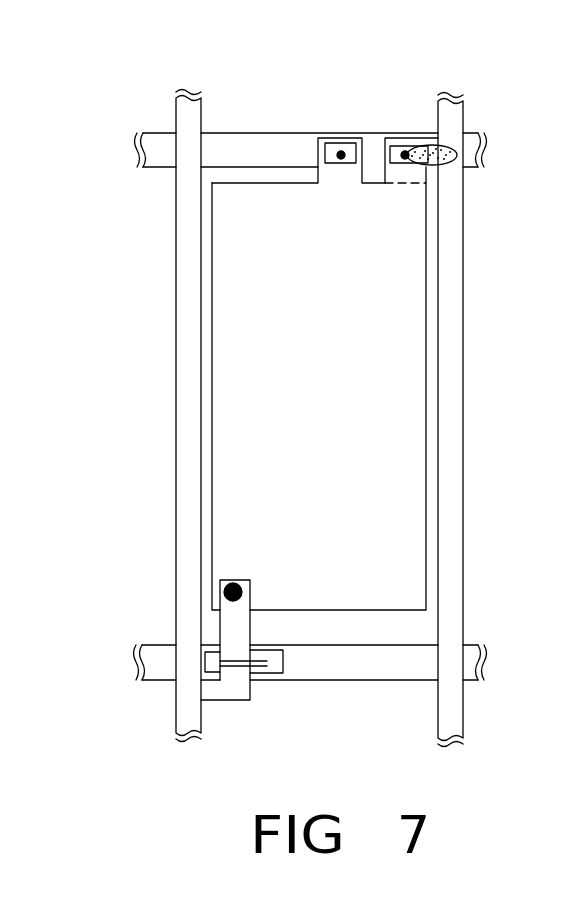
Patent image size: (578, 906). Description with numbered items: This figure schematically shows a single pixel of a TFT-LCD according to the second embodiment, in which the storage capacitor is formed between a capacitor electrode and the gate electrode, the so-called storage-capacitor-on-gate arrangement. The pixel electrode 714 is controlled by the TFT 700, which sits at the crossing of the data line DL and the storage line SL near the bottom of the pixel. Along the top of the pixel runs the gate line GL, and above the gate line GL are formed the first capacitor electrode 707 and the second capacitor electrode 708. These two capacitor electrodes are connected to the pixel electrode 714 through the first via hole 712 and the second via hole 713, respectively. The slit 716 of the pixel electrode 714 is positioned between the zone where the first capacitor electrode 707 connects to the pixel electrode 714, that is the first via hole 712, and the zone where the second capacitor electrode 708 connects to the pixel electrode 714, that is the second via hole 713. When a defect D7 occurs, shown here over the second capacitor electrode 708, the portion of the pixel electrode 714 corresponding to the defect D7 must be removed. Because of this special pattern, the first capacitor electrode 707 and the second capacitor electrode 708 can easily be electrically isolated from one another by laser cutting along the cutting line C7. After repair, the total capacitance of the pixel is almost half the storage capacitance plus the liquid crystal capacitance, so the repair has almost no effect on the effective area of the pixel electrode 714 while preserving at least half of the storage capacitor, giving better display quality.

The TFT 700 is at (264, 668).
The first capacitor electrode 707 is at (320, 135).
The second capacitor electrode 708 is at (475, 125).
The first via hole 712 is at (341, 148).
The second via hole 713 is at (407, 146).
The pixel electrode 714 is at (392, 414).
The slit 716 is at (379, 143).
The gate line GL is at (137, 143).
The storage line SL is at (135, 660).
The data line DL is at (182, 738).
The cutting line C7 is at (398, 206).
The defect D7 is at (448, 163).